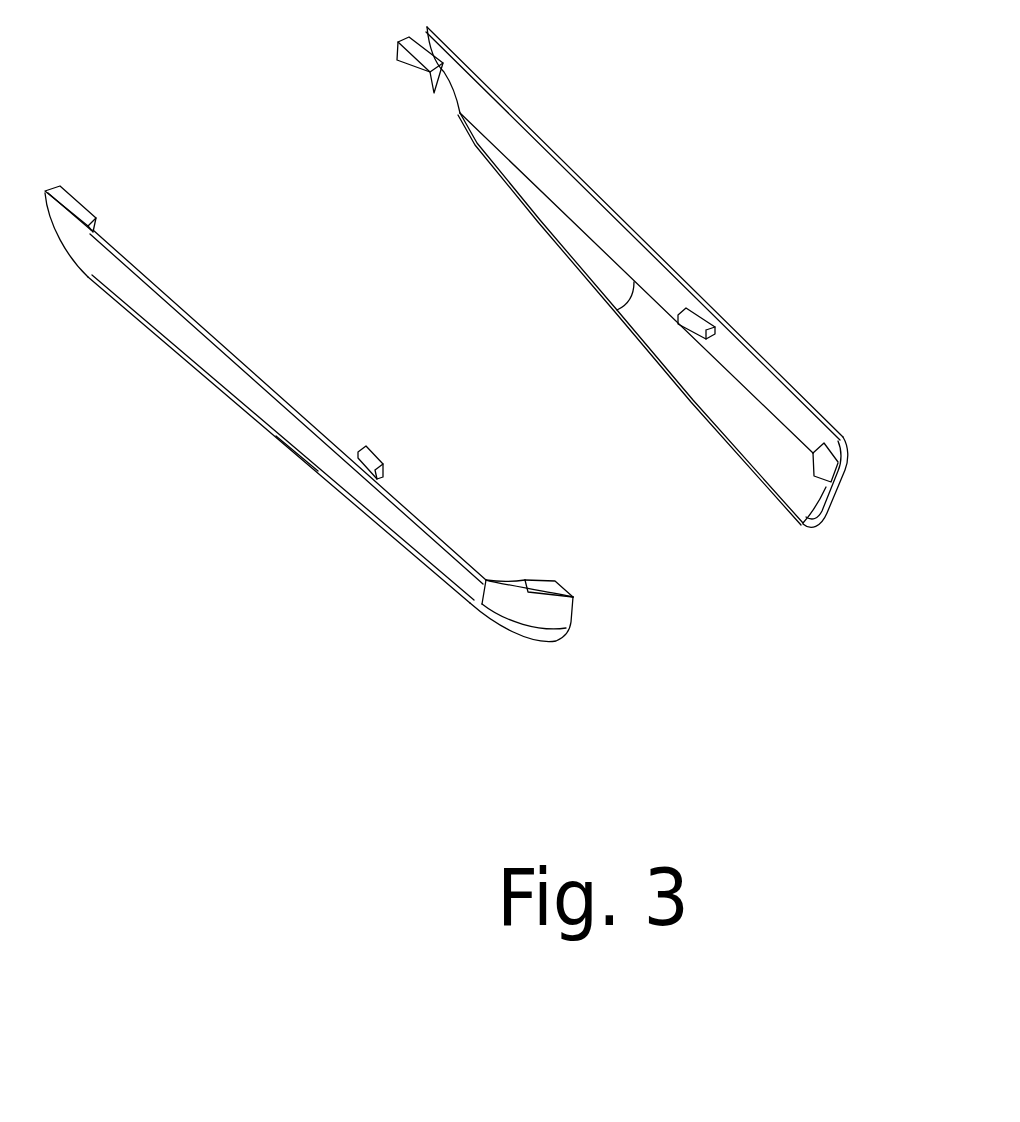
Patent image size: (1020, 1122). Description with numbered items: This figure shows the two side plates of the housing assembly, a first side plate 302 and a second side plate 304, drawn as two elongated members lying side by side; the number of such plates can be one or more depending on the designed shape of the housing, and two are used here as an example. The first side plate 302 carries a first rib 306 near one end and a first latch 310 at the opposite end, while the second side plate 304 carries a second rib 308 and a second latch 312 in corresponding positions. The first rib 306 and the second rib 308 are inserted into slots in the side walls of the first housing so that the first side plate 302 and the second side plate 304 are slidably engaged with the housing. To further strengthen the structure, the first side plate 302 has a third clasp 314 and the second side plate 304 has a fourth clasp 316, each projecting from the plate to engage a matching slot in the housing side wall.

The first side plate 302 is at (245, 397).
The second side plate 304 is at (603, 213).
The first rib 306 is at (82, 203).
The second rib 308 is at (417, 70).
The first latch 310 is at (550, 590).
The second latch 312 is at (820, 472).
The third clasp 314 is at (372, 458).
The fourth clasp 316 is at (683, 323).